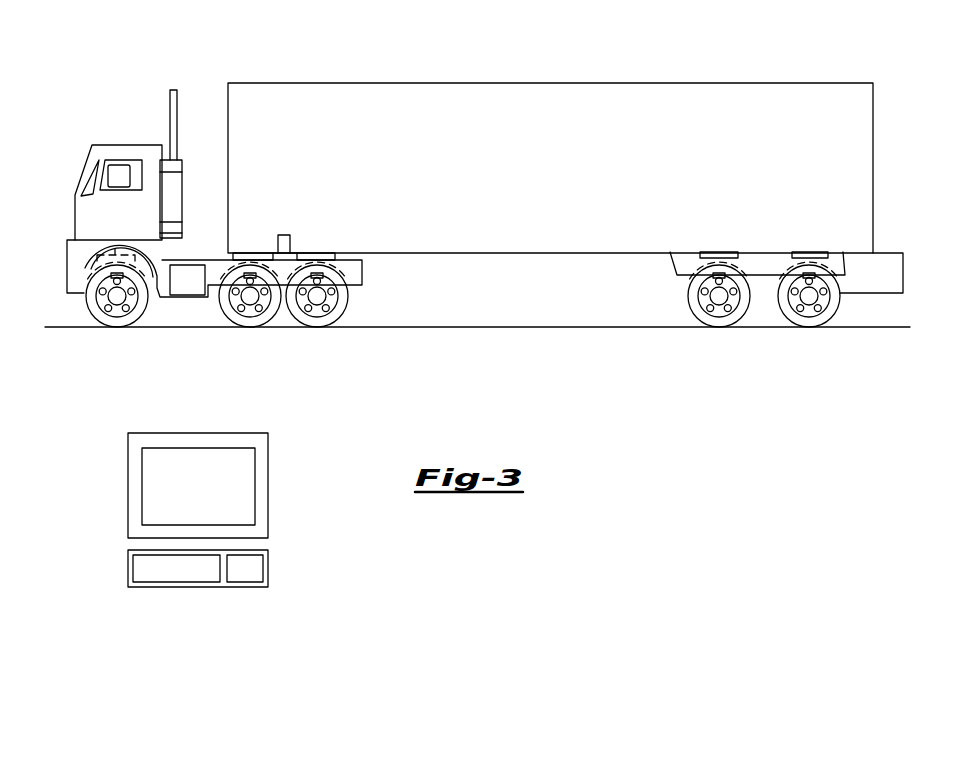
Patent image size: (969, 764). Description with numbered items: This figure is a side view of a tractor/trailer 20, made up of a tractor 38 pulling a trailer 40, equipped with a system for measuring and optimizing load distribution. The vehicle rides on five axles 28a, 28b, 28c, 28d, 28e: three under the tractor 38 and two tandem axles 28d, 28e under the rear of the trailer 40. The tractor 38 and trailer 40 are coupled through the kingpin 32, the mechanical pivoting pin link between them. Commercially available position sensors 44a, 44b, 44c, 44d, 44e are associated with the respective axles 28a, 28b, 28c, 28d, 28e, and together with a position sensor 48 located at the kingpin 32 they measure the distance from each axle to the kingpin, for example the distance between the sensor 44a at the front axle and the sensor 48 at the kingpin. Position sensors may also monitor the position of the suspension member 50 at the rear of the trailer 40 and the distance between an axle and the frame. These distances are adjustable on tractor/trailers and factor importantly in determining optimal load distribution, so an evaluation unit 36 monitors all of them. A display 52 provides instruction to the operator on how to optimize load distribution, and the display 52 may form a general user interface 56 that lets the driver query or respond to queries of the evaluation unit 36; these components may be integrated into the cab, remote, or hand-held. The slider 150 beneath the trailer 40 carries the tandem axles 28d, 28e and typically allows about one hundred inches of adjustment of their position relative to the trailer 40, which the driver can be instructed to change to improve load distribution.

The tractor/trailer 20 is at (872, 107).
The axle 28a is at (131, 312).
The axle 28b is at (238, 312).
The axle 28c is at (330, 312).
The axle 28d is at (705, 312).
The axle 28e is at (820, 312).
The kingpin 32 is at (287, 235).
The evaluation unit 36 is at (268, 457).
The tractor 38 is at (107, 104).
The trailer 40 is at (566, 47).
The position sensor 44a is at (137, 238).
The position sensor 44b is at (243, 253).
The position sensor 44c is at (320, 253).
The position sensor 44d is at (722, 252).
The position sensor 44e is at (808, 252).
The position sensor 48 is at (277, 253).
The suspension member 50 is at (903, 268).
The display 52 is at (142, 477).
The general user interface 56 is at (260, 573).
The slider 150 is at (641, 302).